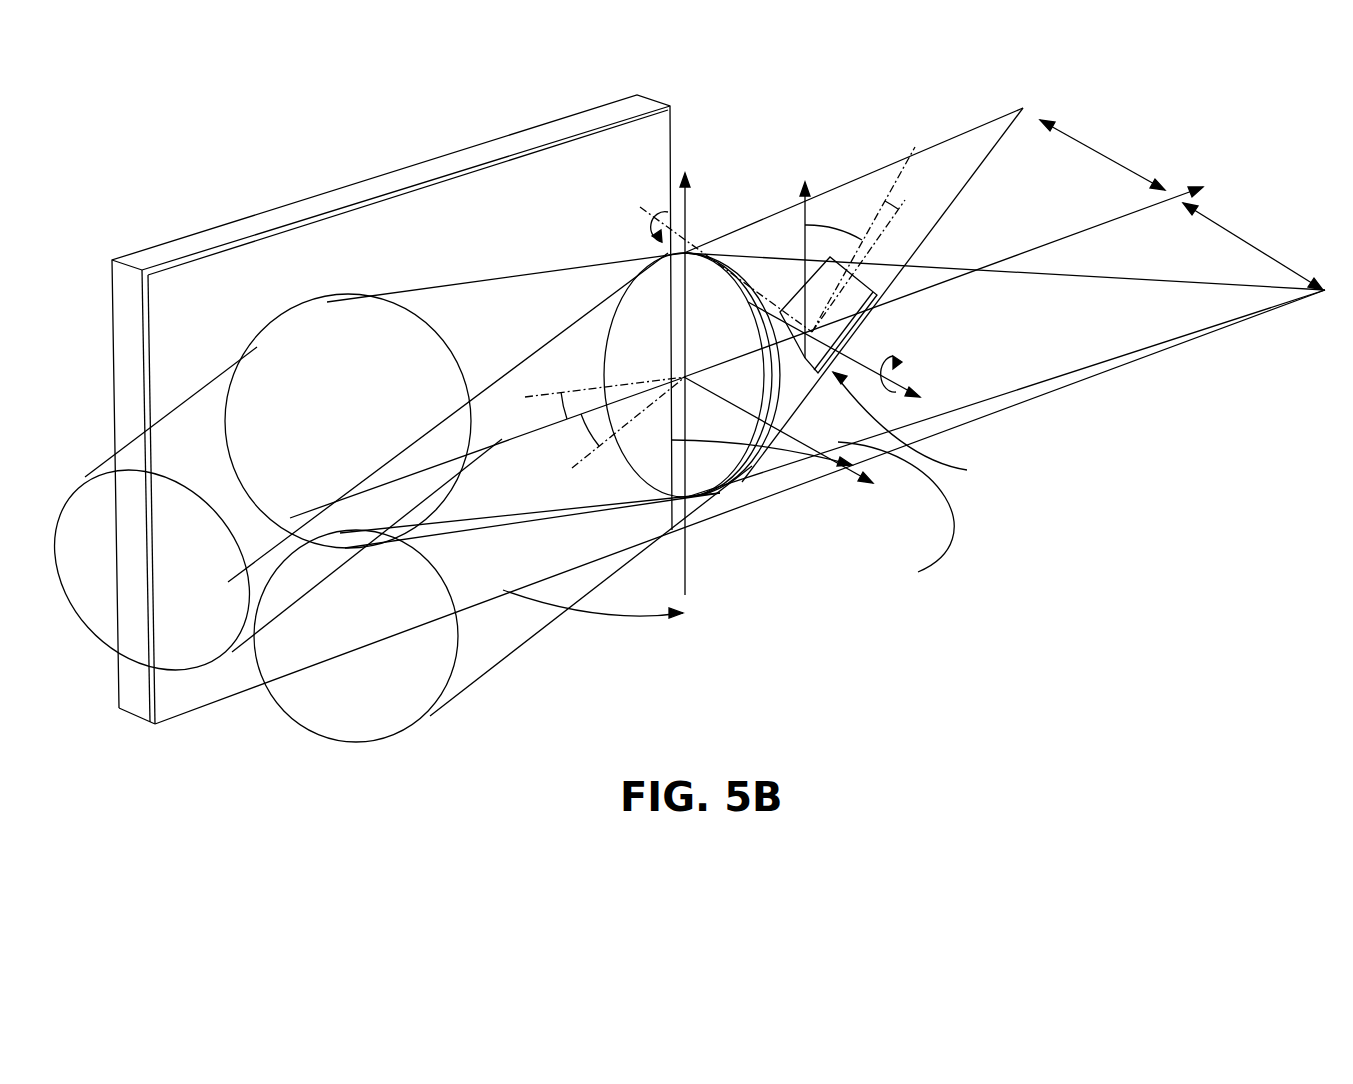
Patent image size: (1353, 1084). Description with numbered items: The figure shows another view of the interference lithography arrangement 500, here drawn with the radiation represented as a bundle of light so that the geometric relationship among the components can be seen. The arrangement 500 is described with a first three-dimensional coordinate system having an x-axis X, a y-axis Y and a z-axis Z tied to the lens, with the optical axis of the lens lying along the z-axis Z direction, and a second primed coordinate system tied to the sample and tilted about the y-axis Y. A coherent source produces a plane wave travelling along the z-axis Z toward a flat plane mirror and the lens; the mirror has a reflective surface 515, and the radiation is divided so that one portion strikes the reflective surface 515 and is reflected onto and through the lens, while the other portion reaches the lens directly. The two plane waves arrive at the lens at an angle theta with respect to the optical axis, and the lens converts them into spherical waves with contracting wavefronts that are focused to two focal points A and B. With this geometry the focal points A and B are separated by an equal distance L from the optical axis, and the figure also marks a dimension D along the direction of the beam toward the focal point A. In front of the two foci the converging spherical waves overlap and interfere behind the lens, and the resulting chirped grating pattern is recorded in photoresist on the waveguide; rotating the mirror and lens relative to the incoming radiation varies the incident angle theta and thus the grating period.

The IL arrangement 500 is at (274, 80).
The reflective surface 515 is at (232, 698).
The focal point A is at (750, 488).
The focal point B is at (859, 283).
The distance D is at (1107, 390).
The distance L is at (1181, 205).
The x-axis X is at (791, 438).
The y-axis Y is at (683, 369).
The z-axis Z is at (955, 272).